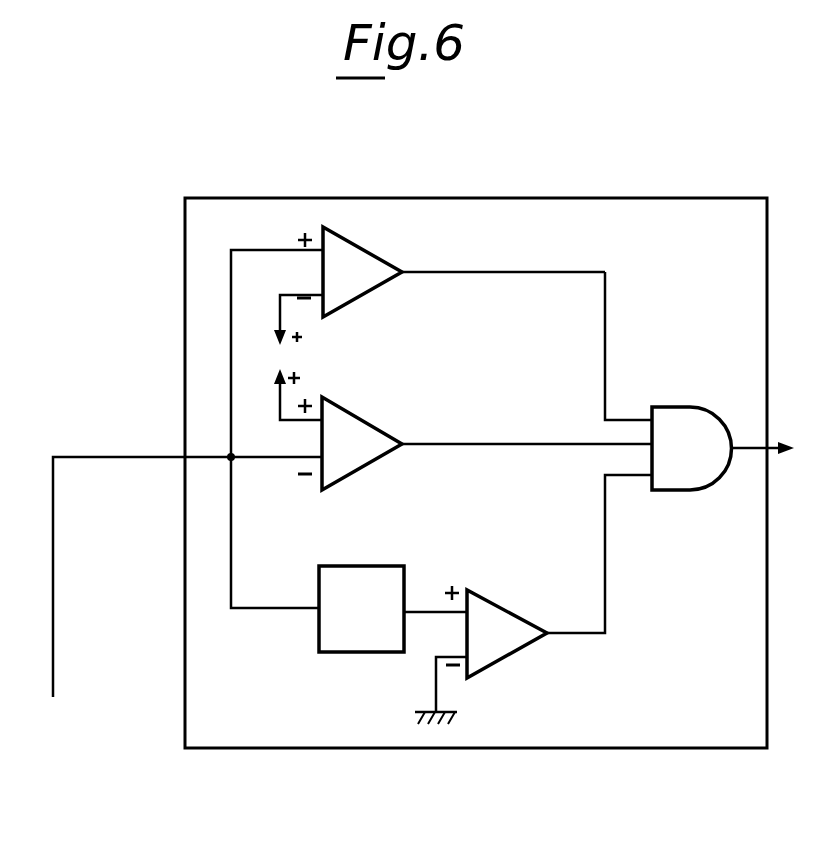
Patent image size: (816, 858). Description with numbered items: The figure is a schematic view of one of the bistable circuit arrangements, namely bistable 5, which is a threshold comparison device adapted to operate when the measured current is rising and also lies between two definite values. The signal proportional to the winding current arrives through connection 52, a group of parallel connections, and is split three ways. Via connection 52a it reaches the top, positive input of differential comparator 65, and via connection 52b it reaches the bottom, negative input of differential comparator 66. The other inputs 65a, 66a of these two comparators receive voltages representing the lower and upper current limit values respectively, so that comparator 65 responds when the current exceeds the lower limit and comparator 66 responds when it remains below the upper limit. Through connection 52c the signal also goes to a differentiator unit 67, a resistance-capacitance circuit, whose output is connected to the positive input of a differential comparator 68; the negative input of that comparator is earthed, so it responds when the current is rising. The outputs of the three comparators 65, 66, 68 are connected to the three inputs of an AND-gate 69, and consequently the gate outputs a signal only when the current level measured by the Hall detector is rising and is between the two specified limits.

The bistable 5 is at (577, 198).
The connection 52 is at (53, 586).
The connection 52a is at (259, 250).
The connection 52b is at (248, 460).
The connection 52c is at (290, 608).
The differential comparator 65 is at (451, 272).
The input 65a is at (278, 315).
The differential comparator 66 is at (475, 443).
The input 66a is at (278, 408).
The differentiator unit 67 is at (393, 609).
The differential comparator 68 is at (533, 498).
The AND-gate 69 is at (723, 448).